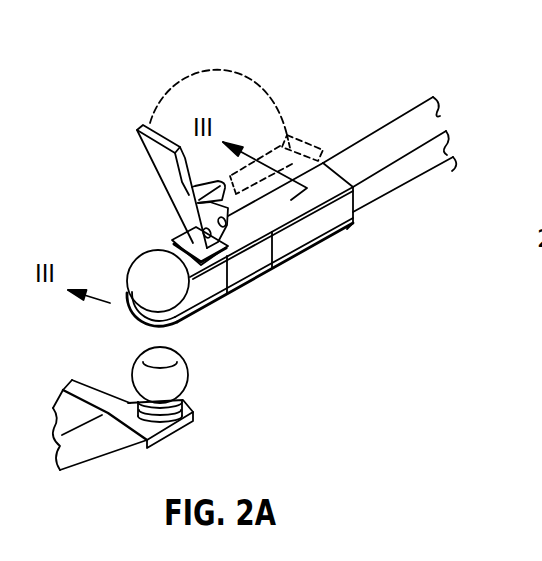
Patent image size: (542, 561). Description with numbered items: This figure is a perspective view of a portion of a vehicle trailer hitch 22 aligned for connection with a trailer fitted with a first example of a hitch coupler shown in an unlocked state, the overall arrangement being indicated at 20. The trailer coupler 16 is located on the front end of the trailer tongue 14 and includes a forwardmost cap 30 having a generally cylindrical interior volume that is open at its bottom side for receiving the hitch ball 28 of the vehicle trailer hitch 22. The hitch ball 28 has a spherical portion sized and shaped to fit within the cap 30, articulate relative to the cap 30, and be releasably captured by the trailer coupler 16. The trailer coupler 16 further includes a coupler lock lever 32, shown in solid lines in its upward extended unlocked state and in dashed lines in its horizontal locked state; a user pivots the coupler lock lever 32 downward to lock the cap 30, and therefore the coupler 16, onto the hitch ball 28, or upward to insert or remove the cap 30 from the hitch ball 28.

The trailer hitch coupler assembly 20 is at (118, 93).
The trailer tongue 14 is at (405, 130).
The trailer coupler 16 is at (345, 226).
The cap 30 is at (152, 262).
The coupler lock lever 32 is at (155, 140).
The hitch ball 28 is at (180, 378).
The vehicle trailer hitch 22 is at (92, 440).